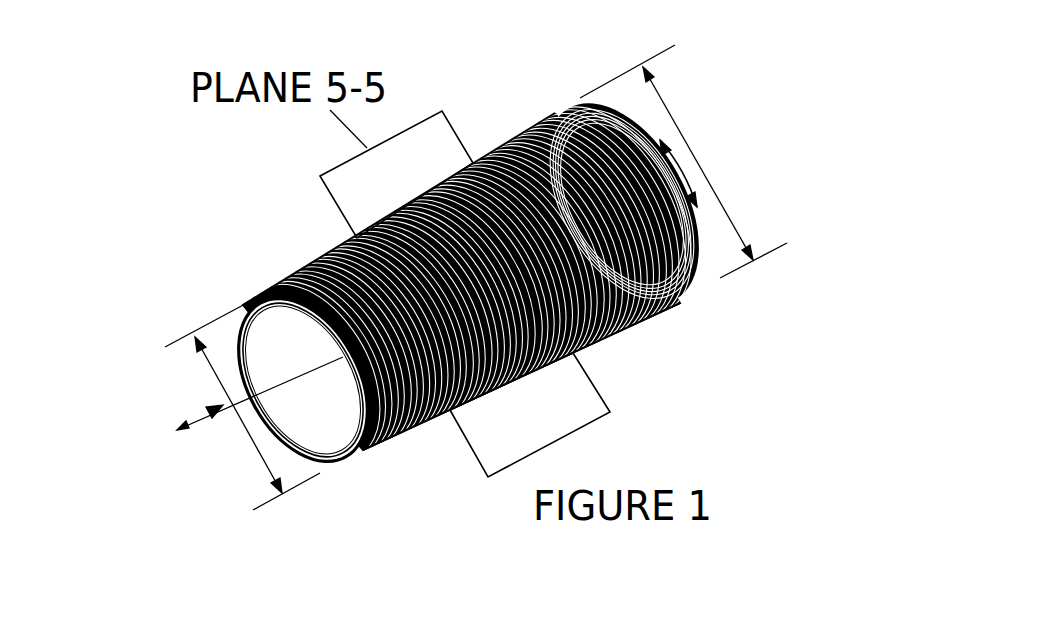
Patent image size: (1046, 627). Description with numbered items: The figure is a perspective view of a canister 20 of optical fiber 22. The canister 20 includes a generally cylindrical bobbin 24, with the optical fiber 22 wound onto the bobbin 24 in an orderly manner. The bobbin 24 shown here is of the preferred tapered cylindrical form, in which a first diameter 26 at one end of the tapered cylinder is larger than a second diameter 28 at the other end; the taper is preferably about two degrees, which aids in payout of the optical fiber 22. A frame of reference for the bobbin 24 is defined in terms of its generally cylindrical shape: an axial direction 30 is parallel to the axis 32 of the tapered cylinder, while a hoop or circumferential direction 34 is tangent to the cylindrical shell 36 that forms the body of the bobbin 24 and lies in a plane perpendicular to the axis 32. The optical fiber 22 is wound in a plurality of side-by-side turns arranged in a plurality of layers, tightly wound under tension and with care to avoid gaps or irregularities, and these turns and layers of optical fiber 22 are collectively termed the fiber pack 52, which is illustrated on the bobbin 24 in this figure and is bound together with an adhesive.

The canister 20 is at (518, 138).
The optical fiber 22 is at (617, 337).
The bobbin 24 is at (343, 457).
The first diameter 26 is at (685, 133).
The second diameter 28 is at (255, 450).
The axial direction 30 is at (198, 413).
The axis 32 is at (207, 428).
The hoop or circumferential direction 34 is at (687, 165).
The cylindrical shell 36 is at (250, 310).
The fiber pack 52 is at (297, 270).